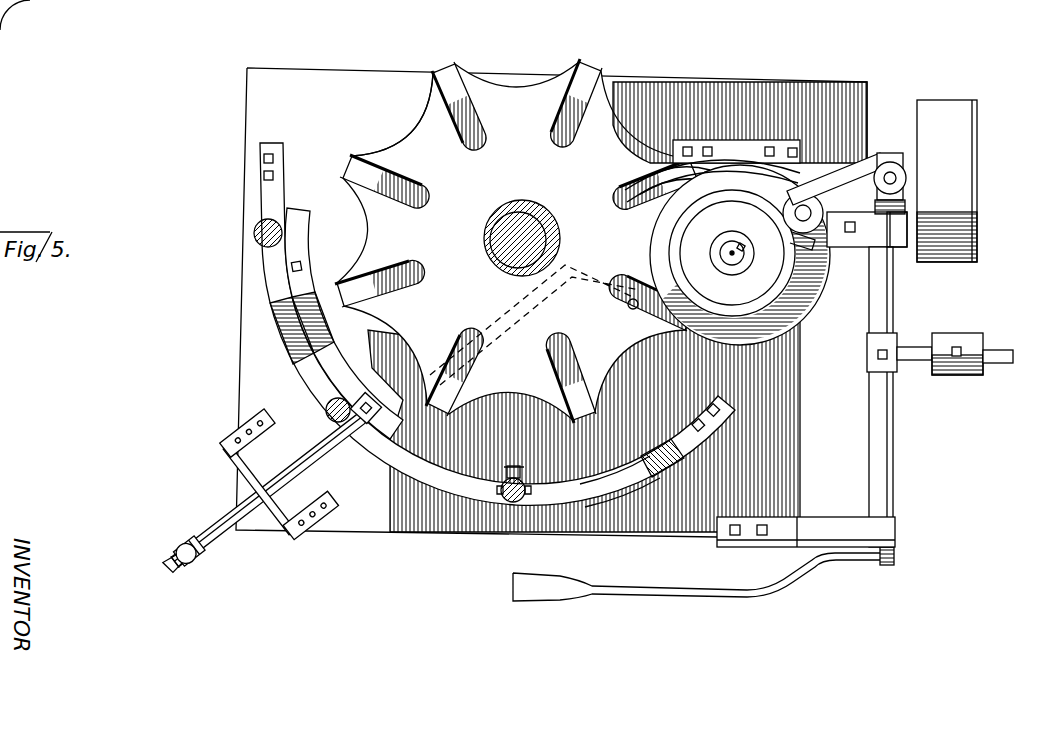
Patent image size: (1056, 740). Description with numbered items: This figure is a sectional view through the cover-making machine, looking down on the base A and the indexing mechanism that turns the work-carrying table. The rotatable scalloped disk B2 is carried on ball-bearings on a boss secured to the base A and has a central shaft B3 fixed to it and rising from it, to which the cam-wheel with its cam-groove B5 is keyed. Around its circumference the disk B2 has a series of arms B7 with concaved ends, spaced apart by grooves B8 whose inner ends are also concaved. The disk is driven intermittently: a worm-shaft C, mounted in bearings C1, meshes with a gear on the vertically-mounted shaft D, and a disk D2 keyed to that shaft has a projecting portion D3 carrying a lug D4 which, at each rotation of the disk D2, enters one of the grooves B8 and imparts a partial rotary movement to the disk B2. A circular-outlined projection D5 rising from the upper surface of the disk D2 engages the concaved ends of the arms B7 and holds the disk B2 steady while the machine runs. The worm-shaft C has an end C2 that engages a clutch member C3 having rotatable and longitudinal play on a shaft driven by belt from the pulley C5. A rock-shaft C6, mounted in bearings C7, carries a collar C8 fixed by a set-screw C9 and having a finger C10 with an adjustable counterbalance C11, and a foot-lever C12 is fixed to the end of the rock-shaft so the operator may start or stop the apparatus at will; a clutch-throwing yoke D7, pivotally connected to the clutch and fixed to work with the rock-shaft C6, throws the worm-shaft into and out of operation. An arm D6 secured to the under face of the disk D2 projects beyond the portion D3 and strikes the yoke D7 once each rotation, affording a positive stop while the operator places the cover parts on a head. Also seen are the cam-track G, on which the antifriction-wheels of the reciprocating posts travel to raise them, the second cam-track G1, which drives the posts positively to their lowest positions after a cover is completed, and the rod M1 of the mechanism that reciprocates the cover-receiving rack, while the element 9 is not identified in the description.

The base A is at (248, 330).
The rotatable scalloped disk B2 is at (540, 127).
The arms B7 is at (420, 130).
The grooves B8 is at (372, 177).
The central shaft B3 is at (520, 238).
The cam-groove B5 is at (680, 248).
The cam-track G is at (413, 480).
The rack segment 9 is at (590, 497).
The second cam-track G1 is at (283, 390).
The rod M1 is at (324, 448).
The vertically-mounted shaft D is at (745, 250).
The circular-outlined projection D5 is at (732, 253).
The projecting portion D3 is at (775, 213).
The disk D2 is at (800, 260).
The lug D4 is at (880, 235).
The worm-shaft C is at (723, 155).
The bearings C1 is at (780, 153).
The end of worm-shaft C2 is at (813, 163).
The clutch member C3 is at (820, 170).
The pulley C5 is at (897, 177).
The clutch-throwing yoke D7 is at (906, 178).
The arm D6 is at (910, 196).
The rock-shaft C6 is at (883, 418).
The bearings C7 is at (895, 248).
The collar C8 is at (882, 342).
The set-screw C9 is at (880, 355).
The adjustable counterbalance C11 is at (950, 337).
The finger C10 is at (997, 350).
The foot-lever C12 is at (590, 595).